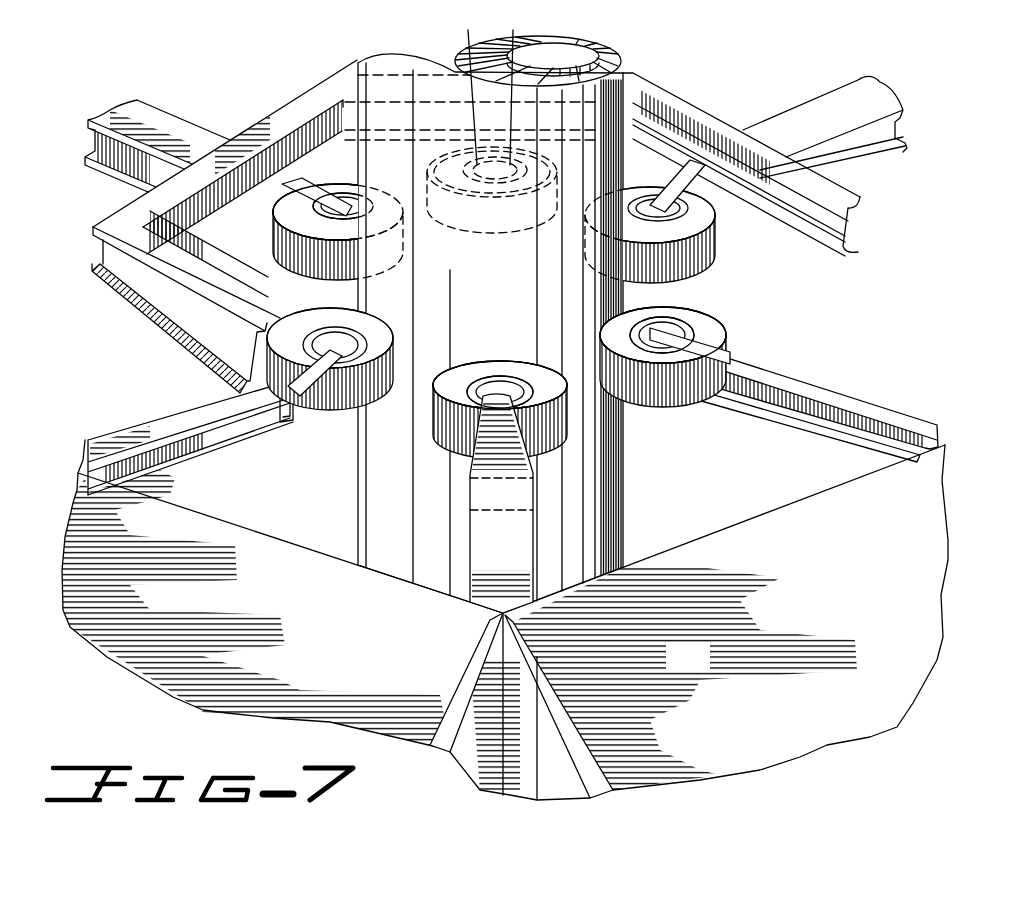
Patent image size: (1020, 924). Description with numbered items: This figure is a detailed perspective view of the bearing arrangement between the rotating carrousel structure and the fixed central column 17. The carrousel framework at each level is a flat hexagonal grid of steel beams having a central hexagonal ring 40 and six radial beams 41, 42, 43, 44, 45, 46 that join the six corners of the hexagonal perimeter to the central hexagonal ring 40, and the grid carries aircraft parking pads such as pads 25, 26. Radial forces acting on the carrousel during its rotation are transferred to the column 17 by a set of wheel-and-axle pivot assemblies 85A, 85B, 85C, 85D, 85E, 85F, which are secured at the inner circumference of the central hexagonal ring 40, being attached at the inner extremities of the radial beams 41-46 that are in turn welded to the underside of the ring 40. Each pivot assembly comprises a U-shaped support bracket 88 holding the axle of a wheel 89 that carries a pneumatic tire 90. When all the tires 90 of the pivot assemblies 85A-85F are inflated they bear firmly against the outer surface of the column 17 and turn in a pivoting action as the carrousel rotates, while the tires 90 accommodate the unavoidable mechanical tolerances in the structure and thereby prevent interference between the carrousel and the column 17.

The central column 17 is at (628, 485).
The aircraft parking pad 25 is at (702, 669).
The aircraft parking pad 26 is at (409, 669).
The central hexagonal ring 40 is at (170, 334).
The radial beam 41 is at (170, 406).
The radial beam 42 is at (190, 130).
The radial beam 43 is at (468, 25).
The radial beam 44 is at (847, 96).
The radial beam 45 is at (845, 393).
The radial beam 46 is at (522, 548).
The wheel-and-axle pivot assembly 85A is at (282, 257).
The wheel-and-axle pivot assembly 85B is at (524, 232).
The wheel-and-axle pivot assembly 85C is at (700, 257).
The wheel-and-axle pivot assembly 85D is at (730, 316).
The wheel-and-axle pivot assembly 85E is at (443, 451).
The wheel-and-axle pivot assembly 85F is at (336, 408).
The U-shaped support bracket 88 is at (305, 185).
The wheel 89 is at (302, 326).
The pneumatic tire 90 is at (295, 320).